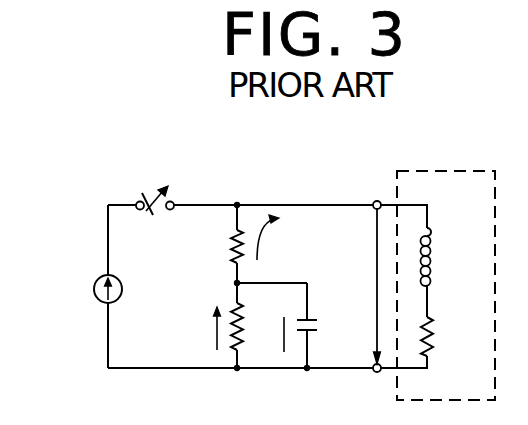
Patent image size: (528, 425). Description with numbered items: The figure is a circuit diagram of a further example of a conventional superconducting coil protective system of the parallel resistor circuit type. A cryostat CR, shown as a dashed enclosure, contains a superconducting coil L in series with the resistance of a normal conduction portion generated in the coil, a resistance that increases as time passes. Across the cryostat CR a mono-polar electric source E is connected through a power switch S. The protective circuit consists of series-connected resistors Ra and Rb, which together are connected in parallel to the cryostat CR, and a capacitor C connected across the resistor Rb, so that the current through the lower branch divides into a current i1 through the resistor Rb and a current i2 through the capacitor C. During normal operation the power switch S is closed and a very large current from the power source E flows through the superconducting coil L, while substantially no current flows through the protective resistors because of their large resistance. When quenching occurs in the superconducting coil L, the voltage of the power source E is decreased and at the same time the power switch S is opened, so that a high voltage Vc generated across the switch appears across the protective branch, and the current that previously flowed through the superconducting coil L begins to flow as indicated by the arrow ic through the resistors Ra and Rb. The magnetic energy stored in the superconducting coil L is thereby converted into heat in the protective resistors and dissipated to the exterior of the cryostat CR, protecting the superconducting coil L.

The mono-polar electric source E is at (94, 287).
The power switch S is at (155, 188).
The resistor Ra is at (218, 247).
The resistor Rb is at (255, 326).
The capacitor C is at (318, 333).
The electric current ic is at (280, 237).
The current i1 is at (216, 315).
The current i2 is at (273, 320).
The high voltage Vc is at (362, 286).
The cryostat CR is at (444, 169).
The superconducting coil L is at (439, 257).